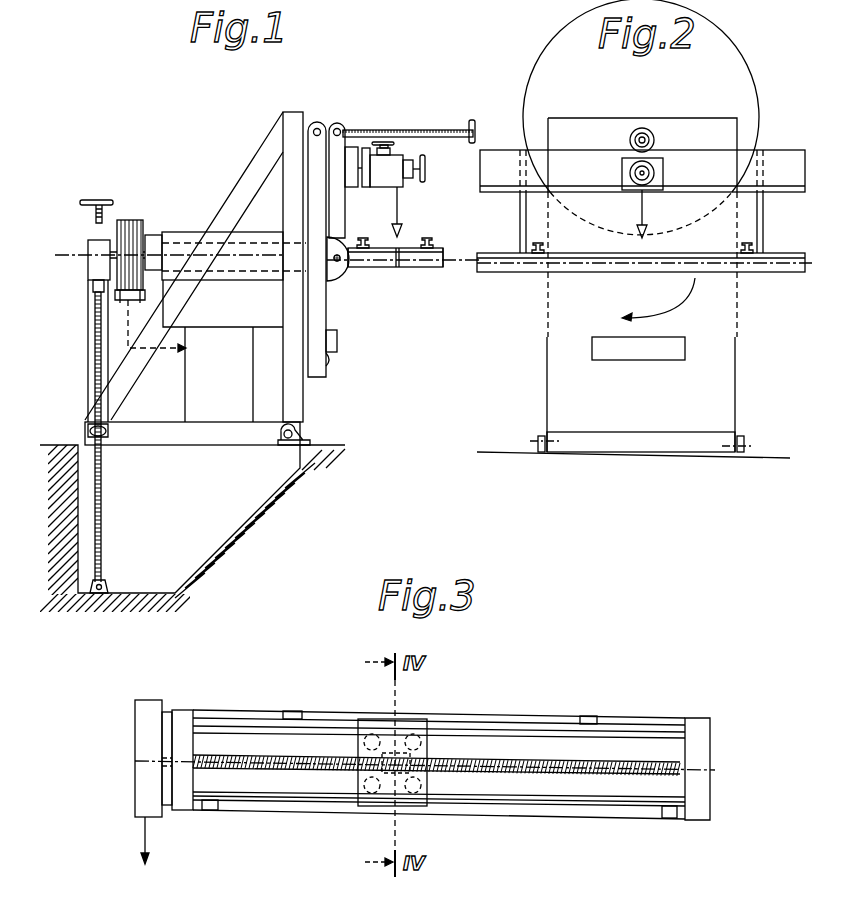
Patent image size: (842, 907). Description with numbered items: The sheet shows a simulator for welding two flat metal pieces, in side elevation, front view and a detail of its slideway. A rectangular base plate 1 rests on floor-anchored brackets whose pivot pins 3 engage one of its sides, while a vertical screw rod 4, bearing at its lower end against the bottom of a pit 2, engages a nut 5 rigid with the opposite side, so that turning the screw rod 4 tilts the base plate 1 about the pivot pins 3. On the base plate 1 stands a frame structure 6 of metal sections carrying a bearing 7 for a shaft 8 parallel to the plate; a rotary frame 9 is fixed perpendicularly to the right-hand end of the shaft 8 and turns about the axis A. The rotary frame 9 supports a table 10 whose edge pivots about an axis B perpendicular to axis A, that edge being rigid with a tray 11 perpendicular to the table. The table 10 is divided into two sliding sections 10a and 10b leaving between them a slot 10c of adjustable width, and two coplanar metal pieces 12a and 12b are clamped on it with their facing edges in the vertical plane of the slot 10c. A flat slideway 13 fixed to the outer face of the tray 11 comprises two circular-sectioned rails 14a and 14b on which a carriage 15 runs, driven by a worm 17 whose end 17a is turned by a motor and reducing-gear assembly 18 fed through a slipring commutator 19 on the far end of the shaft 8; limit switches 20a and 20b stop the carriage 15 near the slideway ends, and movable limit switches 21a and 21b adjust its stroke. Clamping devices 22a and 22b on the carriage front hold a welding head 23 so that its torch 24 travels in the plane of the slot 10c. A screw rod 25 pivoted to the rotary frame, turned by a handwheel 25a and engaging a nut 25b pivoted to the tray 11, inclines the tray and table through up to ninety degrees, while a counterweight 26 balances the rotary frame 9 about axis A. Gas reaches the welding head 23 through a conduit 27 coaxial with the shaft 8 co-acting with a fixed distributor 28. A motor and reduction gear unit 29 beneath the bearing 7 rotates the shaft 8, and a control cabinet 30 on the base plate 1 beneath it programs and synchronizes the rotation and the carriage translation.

In FIG. 1, the base plate 1 is at (163, 428).
In FIG. 2, the base plate 1 is at (668, 438).
In FIG. 1, the pit 2 is at (192, 518).
In FIG. 1, the pivot pins 3 is at (284, 446).
In FIG. 1, the vertical screw rod 4 is at (97, 339).
In FIG. 1, the nut 5 is at (107, 448).
In FIG. 1, the frame structure 6 is at (262, 165).
In FIG. 2, the frame structure 6 is at (566, 374).
In FIG. 1, the bearing 7 is at (186, 232).
In FIG. 1, the shaft 8 is at (151, 243).
In FIG. 1, the rotary frame 9 is at (316, 336).
In FIG. 2, the rotary frame 9 is at (746, 295).
In FIG. 1, the table 10 is at (352, 270).
In FIG. 2, the table 10 is at (603, 274).
In FIG. 1, the table section 10a is at (362, 266).
In FIG. 1, the table section 10b is at (442, 264).
In FIG. 1, the slot 10c is at (405, 268).
In FIG. 1, the tray 11 is at (340, 204).
In FIG. 1, the flat piece of metal 12a is at (372, 247).
In FIG. 1, the flat piece of metal 12b is at (412, 251).
In FIG. 2, the flat piece of metal 12b is at (680, 251).
In FIG. 1, the slideway 13 is at (322, 153).
In FIG. 2, the slideway 13 is at (748, 156).
In FIG. 3, the slideway 13 is at (655, 722).
In FIG. 3, the rail 14a is at (502, 730).
In FIG. 3, the rail 14b is at (588, 803).
In FIG. 3, the carriage 15 is at (370, 800).
In FIG. 3, the worm 17 is at (565, 767).
In FIG. 3, the worm end 17a is at (168, 757).
In FIG. 3, the motor and reducing-gear assembly 18 is at (145, 770).
In FIG. 1, the slipring commutator 19 is at (135, 222).
In FIG. 3, the slipring commutator 19 is at (145, 857).
In FIG. 3, the limit switch 20a is at (209, 811).
In FIG. 3, the limit switch 20b is at (664, 823).
In FIG. 3, the limit switch 21a is at (292, 713).
In FIG. 3, the limit switch 21b is at (593, 706).
In FIG. 1, the clamping device 22a is at (391, 157).
In FIG. 1, the clamping device 22b is at (423, 168).
In FIG. 2, the clamping device 22b is at (655, 174).
In FIG. 1, the welding head 23 is at (398, 150).
In FIG. 2, the welding head 23 is at (630, 177).
In FIG. 1, the torch 24 is at (399, 203).
In FIG. 2, the torch 24 is at (646, 216).
In FIG. 1, the screw rod 25 is at (348, 128).
In FIG. 1, the handwheel 25a is at (476, 129).
In FIG. 2, the handwheel 25a is at (650, 130).
In FIG. 1, the nut 25b is at (338, 128).
In FIG. 1, the counterweight 26 is at (328, 356).
In FIG. 2, the counterweight 26 is at (664, 347).
In FIG. 1, the conduit 27 is at (93, 241).
In FIG. 1, the fixed distributor 28 is at (83, 331).
In FIG. 1, the motor and reduction gear unit 29 is at (156, 326).
In FIG. 1, the control cabinet 30 is at (223, 351).
In FIG. 1, the axis of rotation A is at (87, 258).
In FIG. 1, the pivot axis B is at (337, 272).
In FIG. 2, the pivot axis B is at (805, 272).